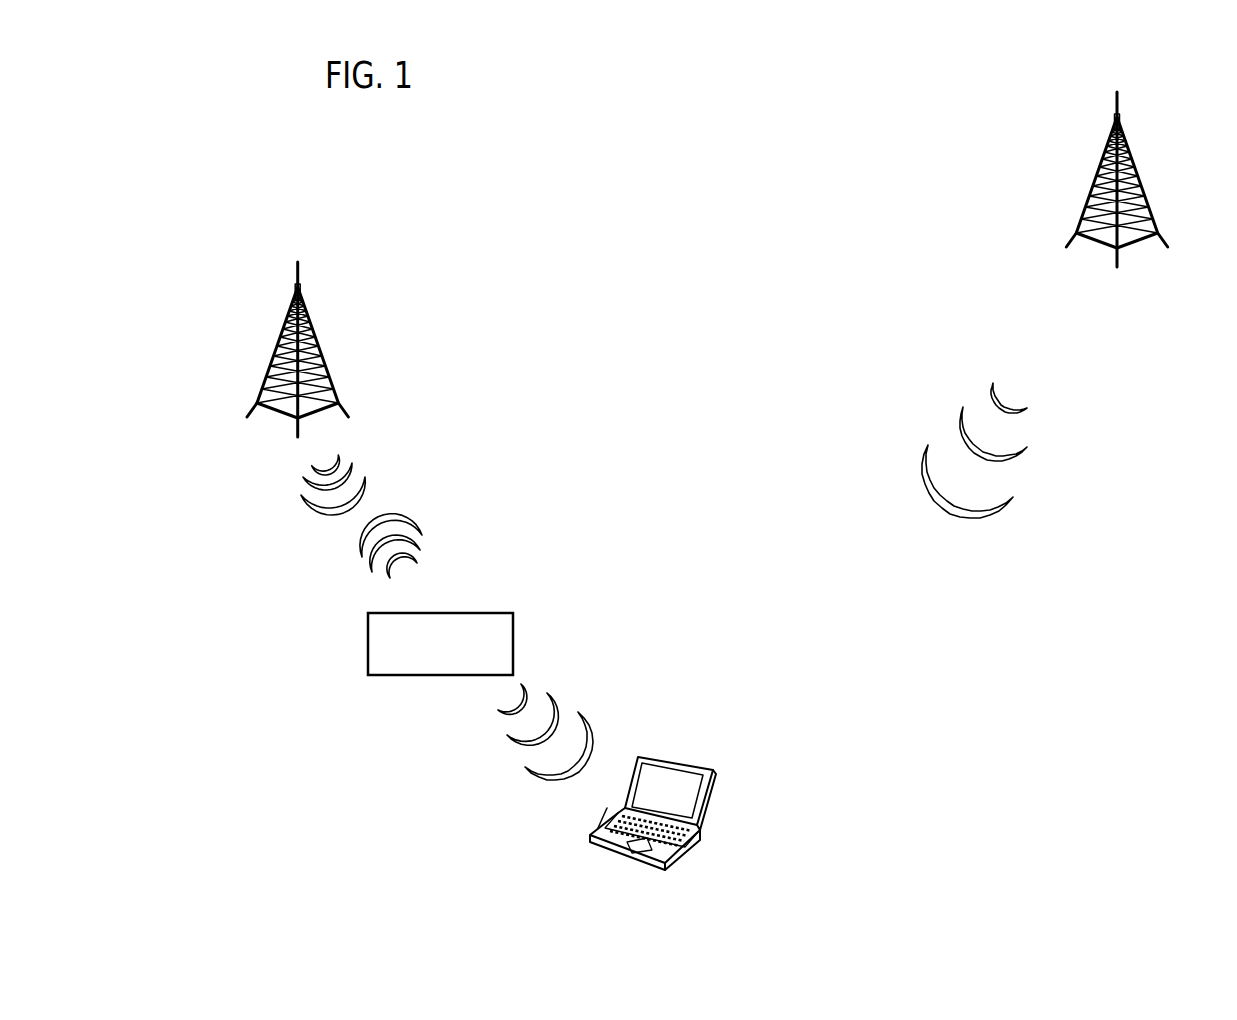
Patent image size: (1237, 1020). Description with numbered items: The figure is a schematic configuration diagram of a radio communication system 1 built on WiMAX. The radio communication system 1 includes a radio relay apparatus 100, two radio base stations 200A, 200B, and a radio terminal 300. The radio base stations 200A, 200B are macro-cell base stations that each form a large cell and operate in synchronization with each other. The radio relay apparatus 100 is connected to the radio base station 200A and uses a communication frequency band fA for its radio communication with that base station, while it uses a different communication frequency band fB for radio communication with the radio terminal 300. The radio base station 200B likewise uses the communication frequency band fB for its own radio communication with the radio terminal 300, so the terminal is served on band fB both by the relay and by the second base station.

The radio communication system 1 is at (672, 136).
The radio relay apparatus 100 is at (368, 650).
The radio base station 200A is at (323, 360).
The radio base station 200B is at (1090, 202).
The radio terminal 300 is at (683, 760).